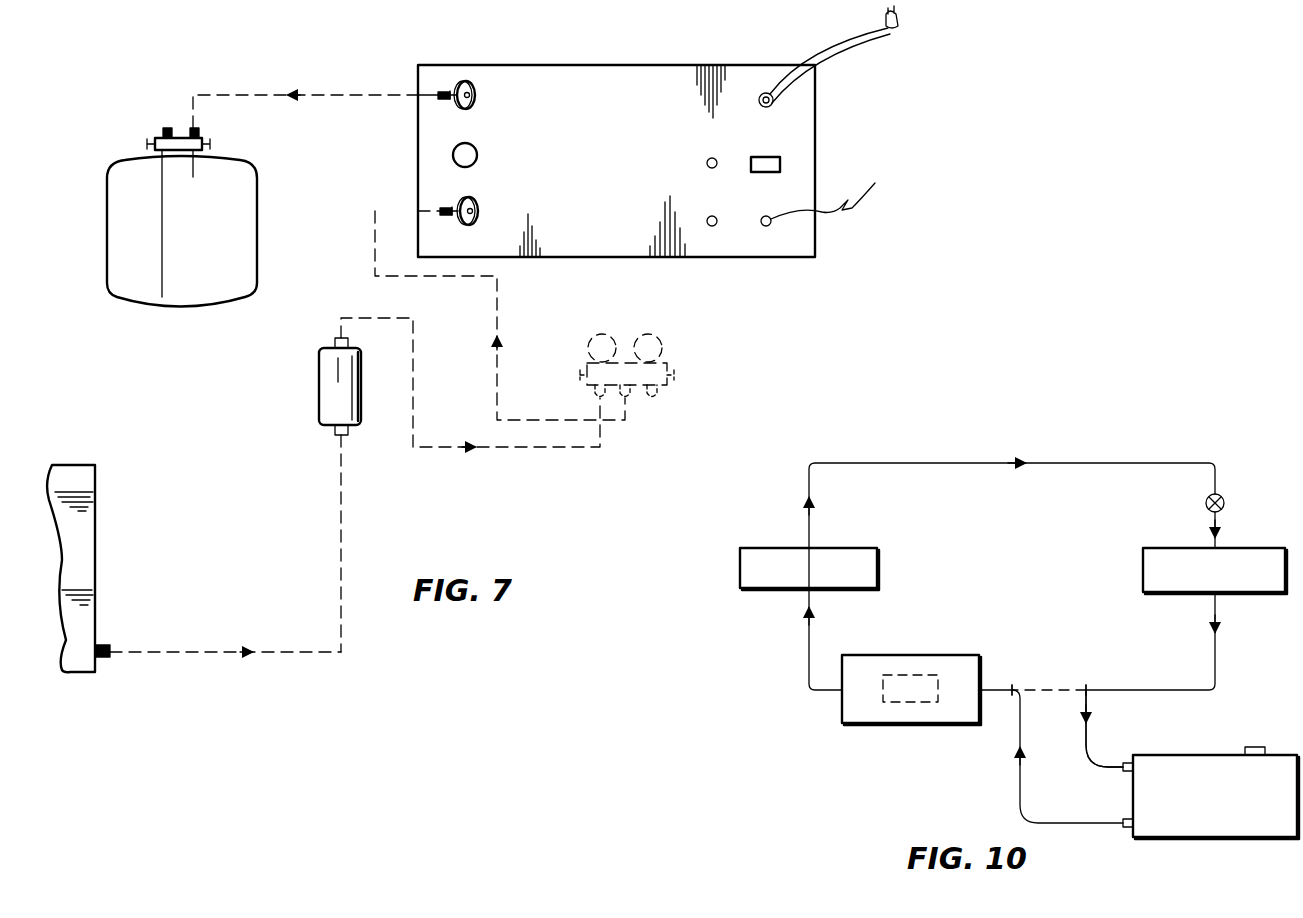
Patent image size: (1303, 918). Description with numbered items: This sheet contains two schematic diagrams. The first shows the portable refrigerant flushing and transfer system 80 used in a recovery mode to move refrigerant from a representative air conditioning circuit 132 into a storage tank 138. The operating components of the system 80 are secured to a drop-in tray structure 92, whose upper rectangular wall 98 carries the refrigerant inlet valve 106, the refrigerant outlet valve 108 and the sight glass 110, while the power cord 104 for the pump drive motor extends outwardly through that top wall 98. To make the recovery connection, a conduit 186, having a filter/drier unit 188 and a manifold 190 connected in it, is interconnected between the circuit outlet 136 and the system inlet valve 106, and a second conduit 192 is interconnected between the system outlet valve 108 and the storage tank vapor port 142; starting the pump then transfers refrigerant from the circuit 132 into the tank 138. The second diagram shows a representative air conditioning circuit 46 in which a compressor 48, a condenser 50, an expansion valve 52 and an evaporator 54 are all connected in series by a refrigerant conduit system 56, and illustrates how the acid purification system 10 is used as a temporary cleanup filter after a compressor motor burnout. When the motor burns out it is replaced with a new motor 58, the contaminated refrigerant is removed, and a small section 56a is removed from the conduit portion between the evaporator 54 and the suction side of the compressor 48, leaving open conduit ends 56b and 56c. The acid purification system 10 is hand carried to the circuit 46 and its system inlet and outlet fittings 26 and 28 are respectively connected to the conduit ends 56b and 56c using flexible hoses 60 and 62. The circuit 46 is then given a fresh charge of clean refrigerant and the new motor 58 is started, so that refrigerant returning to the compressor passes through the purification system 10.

In FIG. 7, the portable refrigerant flushing and transfer system 80 is at (652, 54).
In FIG. 7, the drop-in tray structure 92 is at (818, 143).
In FIG. 7, the upper rectangular wall 98 is at (622, 106).
In FIG. 7, the power cord 104 is at (858, 60).
In FIG. 7, the refrigerant inlet valve 106 is at (479, 210).
In FIG. 7, the refrigerant outlet valve 108 is at (476, 95).
In FIG. 7, the sight glass 110 is at (476, 152).
In FIG. 7, the storage tank 138 is at (258, 242).
In FIG. 7, the storage tank vapor port 142 is at (199, 132).
In FIG. 7, the conduit 192 is at (339, 93).
In FIG. 7, the filter/drier unit 188 is at (319, 385).
In FIG. 7, the conduit 186 is at (341, 525).
In FIG. 7, the manifold 190 is at (675, 378).
In FIG. 7, the air conditioning circuit 132 is at (101, 518).
In FIG. 7, the circuit outlet 136 is at (111, 640).
In FIG. 10, the air conditioning circuit 46 is at (1067, 449).
In FIG. 10, the compressor 48 is at (917, 655).
In FIG. 10, the condenser 50 is at (866, 548).
In FIG. 10, the expansion valve 52 is at (1222, 498).
In FIG. 10, the evaporator 54 is at (1172, 548).
In FIG. 10, the refrigerant conduit system 56 is at (935, 463).
In FIG. 10, the small section 56a is at (1060, 690).
In FIG. 10, the open conduit end 56b is at (1117, 728).
In FIG. 10, the open conduit end 56c is at (1012, 690).
In FIG. 10, the new motor 58 is at (897, 675).
In FIG. 10, the flexible hose 60 is at (1080, 748).
In FIG. 10, the flexible hose 62 is at (1018, 790).
In FIG. 10, the acid purification system 10 is at (1203, 746).
In FIG. 10, the system inlet fitting 26 is at (1128, 763).
In FIG. 10, the system outlet fitting 28 is at (1122, 822).